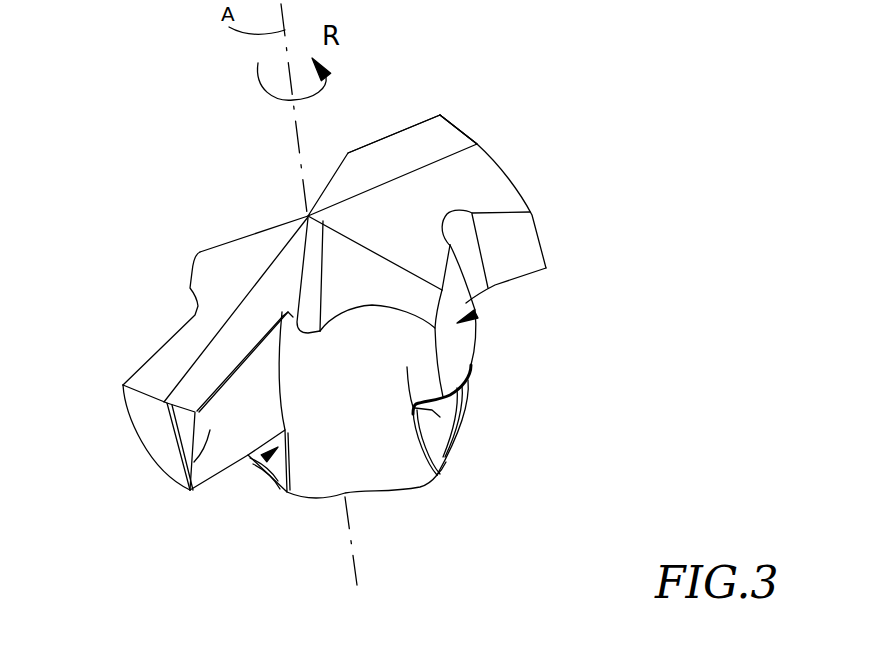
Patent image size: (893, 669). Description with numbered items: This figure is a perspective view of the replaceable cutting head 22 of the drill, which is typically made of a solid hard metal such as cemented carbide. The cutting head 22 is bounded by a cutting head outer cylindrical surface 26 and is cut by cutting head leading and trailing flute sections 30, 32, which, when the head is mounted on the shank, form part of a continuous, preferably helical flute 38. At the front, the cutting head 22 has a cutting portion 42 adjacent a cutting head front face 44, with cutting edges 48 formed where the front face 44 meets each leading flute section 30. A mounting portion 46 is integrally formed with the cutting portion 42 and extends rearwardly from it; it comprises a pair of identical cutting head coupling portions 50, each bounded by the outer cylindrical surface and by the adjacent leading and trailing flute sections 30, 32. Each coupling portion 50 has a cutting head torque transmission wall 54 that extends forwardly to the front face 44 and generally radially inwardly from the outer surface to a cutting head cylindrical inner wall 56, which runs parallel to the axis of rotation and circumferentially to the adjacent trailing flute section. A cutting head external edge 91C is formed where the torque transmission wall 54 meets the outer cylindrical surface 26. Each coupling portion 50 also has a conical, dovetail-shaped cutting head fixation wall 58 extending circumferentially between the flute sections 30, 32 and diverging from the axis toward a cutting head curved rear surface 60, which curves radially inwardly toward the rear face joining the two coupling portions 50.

The cutting head 22 is at (565, 137).
The cutting head outer cylindrical surface 26 is at (155, 412).
The cutting head leading flute section 30 is at (182, 476).
The cutting head trailing flute section 32 is at (435, 402).
The cutting head flute 38 is at (365, 392).
The cutting portion 42 is at (458, 125).
The cutting head front face 44 is at (428, 131).
The mounting portion 46 is at (321, 446).
The cutting edge 48 is at (375, 145).
The cutting head coupling portion 50 is at (264, 458).
The cutting head torque transmission wall 54 is at (515, 247).
The cutting head cylindrical inner wall 56 is at (190, 290).
The cutting head fixation wall 58 is at (457, 402).
The cutting head curved rear surface 60 is at (452, 470).
The cutting head external edge 91C is at (543, 238).